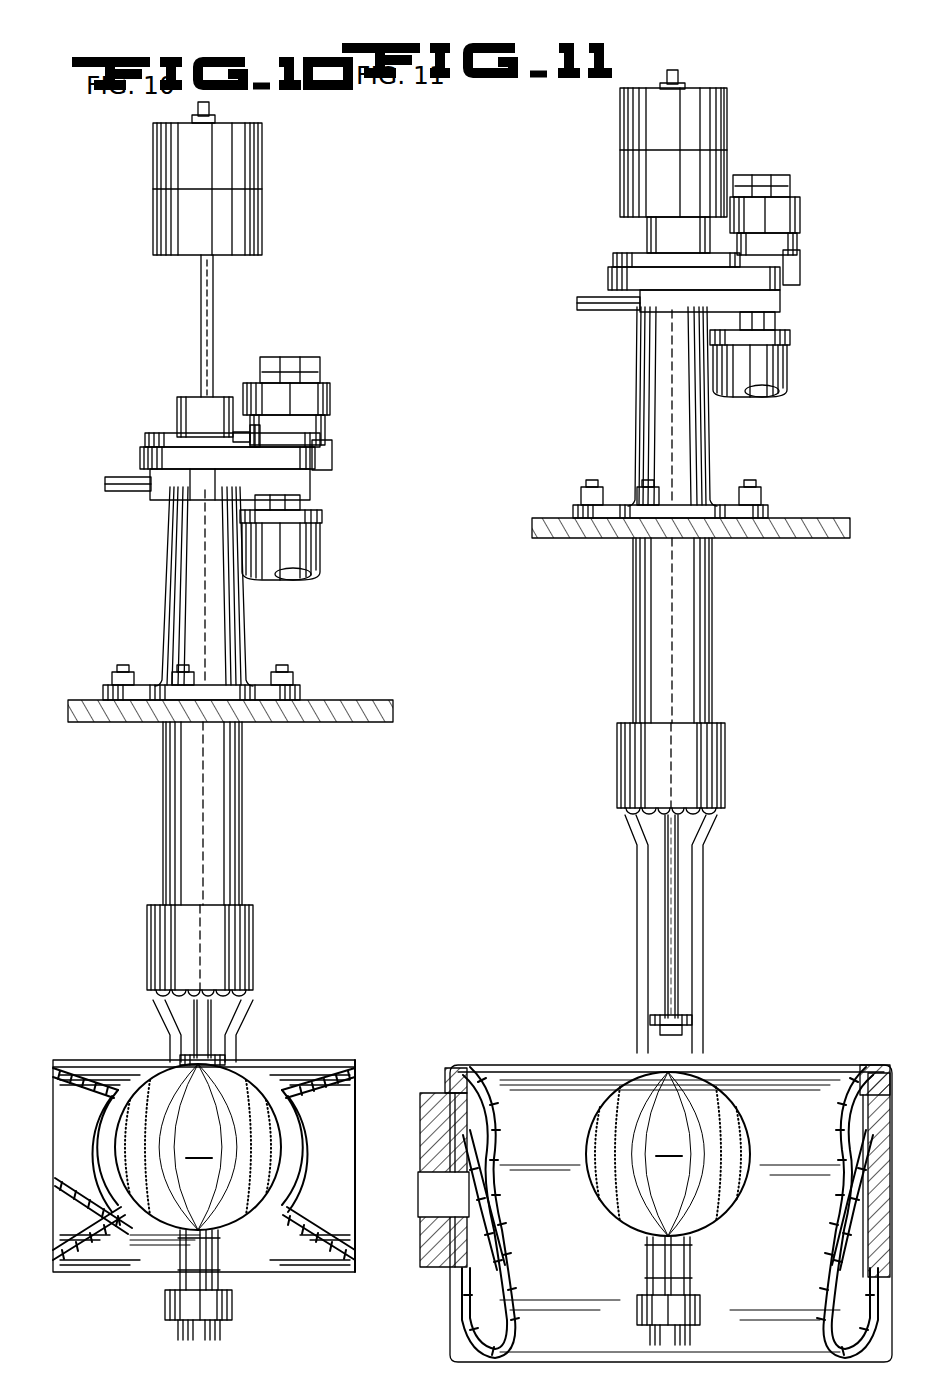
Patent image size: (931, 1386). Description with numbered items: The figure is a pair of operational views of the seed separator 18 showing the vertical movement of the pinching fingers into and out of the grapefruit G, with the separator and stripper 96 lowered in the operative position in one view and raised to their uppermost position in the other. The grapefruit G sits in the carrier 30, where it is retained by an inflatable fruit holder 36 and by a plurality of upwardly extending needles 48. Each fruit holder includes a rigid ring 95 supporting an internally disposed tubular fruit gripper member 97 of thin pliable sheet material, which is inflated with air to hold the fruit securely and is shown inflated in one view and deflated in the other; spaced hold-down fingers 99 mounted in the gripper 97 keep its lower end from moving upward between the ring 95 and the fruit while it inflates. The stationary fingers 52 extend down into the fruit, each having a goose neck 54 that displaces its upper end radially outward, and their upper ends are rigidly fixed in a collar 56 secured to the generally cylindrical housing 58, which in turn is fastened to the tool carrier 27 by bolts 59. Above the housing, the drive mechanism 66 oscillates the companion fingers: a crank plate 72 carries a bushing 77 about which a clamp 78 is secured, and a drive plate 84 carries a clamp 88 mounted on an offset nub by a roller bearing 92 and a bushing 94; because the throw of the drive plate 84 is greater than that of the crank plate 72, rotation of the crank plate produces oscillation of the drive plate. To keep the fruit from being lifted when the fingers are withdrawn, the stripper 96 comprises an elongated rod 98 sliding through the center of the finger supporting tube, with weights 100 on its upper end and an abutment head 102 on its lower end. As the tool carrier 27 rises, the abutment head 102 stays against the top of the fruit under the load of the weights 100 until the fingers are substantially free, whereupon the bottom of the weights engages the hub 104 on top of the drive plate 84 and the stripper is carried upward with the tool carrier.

In FIG. 10, the seed separator 18 is at (268, 860).
In FIG. 11, the seed separator 18 is at (580, 868).
In FIG. 10, the tool carrier 27 is at (360, 706).
In FIG. 11, the tool carrier 27 is at (810, 522).
In FIG. 10, the carrier 30 is at (92, 1058).
In FIG. 11, the carrier 30 is at (553, 1062).
In FIG. 10, the inflatable fruit holder 36 is at (340, 1062).
In FIG. 11, the inflatable fruit holder 36 is at (810, 1062).
In FIG. 10, the needles 48 is at (188, 1262).
In FIG. 11, the needles 48 is at (668, 1278).
In FIG. 10, the stationary fingers 52 is at (168, 1040).
In FIG. 11, the stationary fingers 52 is at (637, 878).
In FIG. 10, the goose neck 54 is at (158, 998).
In FIG. 11, the goose neck 54 is at (628, 828).
In FIG. 10, the collar 56 is at (147, 915).
In FIG. 11, the collar 56 is at (617, 754).
In FIG. 10, the housing 58 is at (163, 803).
In FIG. 11, the housing 58 is at (712, 626).
In FIG. 10, the bolts 59 is at (177, 668).
In FIG. 11, the bolts 59 is at (648, 484).
In FIG. 10, the drive mechanism 66 is at (318, 445).
In FIG. 11, the drive mechanism 66 is at (788, 257).
In FIG. 10, the crank plate 72 is at (334, 455).
In FIG. 11, the crank plate 72 is at (802, 270).
In FIG. 10, the bushing 77 is at (252, 380).
In FIG. 10, the clamp 78 is at (240, 395).
In FIG. 10, the drive plate 84 is at (145, 440).
In FIG. 11, the drive plate 84 is at (622, 258).
In FIG. 10, the clamp 88 is at (332, 403).
In FIG. 11, the clamp 88 is at (802, 220).
In FIG. 10, the roller bearing 92 is at (327, 426).
In FIG. 11, the roller bearing 92 is at (800, 243).
In FIG. 10, the bushing 94 is at (296, 372).
In FIG. 11, the bushing 94 is at (792, 200).
In FIG. 11, the rigid ring 95 is at (445, 1102).
In FIG. 10, the stripper 96 is at (196, 290).
In FIG. 11, the stripper 96 is at (662, 933).
In FIG. 10, the tubular fruit gripper member 97 is at (302, 1243).
In FIG. 11, the tubular fruit gripper member 97 is at (548, 1113).
In FIG. 10, the rod 98 is at (200, 318).
In FIG. 11, the rod 98 is at (672, 938).
In FIG. 10, the hold-down fingers 99 is at (72, 1182).
In FIG. 11, the hold-down fingers 99 is at (492, 1256).
In FIG. 10, the weights 100 is at (155, 190).
In FIG. 11, the weights 100 is at (622, 156).
In FIG. 10, the abutment head 102 is at (222, 1058).
In FIG. 11, the abutment head 102 is at (693, 1021).
In FIG. 10, the hub 104 is at (176, 408).
In FIG. 11, the hub 104 is at (646, 232).
In FIG. 10, the grapefruit G is at (198, 1147).
In FIG. 11, the grapefruit G is at (668, 1154).